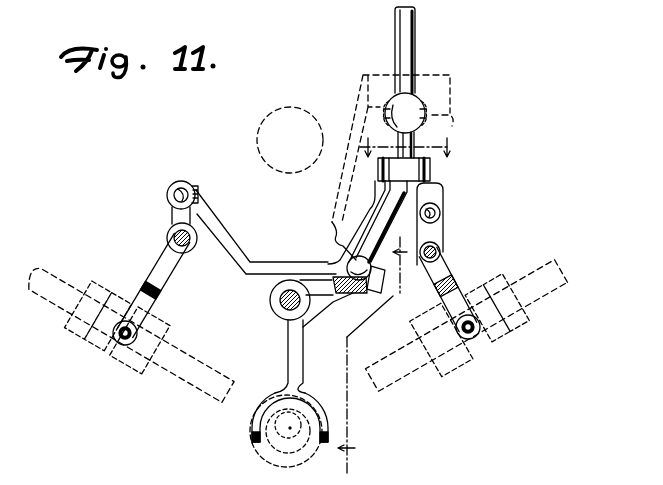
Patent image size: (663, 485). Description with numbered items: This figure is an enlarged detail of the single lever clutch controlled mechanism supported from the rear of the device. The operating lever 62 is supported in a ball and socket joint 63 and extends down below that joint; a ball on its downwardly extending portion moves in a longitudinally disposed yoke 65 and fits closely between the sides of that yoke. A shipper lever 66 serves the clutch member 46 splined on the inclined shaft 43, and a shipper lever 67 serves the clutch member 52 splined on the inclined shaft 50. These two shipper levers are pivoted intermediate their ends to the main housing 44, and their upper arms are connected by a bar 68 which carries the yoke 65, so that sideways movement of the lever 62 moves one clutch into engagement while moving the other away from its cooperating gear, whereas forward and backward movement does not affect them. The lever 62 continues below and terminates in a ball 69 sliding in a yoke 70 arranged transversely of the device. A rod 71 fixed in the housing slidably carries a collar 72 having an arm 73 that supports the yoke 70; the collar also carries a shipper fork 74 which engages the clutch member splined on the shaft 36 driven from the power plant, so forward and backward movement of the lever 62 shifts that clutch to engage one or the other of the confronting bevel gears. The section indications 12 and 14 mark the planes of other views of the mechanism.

The operating lever 62 is at (405, 53).
The ball and socket joint 63 is at (418, 116).
The section line 14- 14 is at (402, 147).
The yoke 65 is at (433, 168).
The main housing 44 is at (430, 187).
The bar 68 is at (267, 270).
The shipper lever 67 is at (160, 270).
The clutch member 52 is at (133, 368).
The inclined shaft 50 is at (202, 383).
The rod 71 is at (278, 293).
The collar 72 is at (272, 306).
The arm 73 is at (325, 303).
The ball 69 is at (371, 298).
The shipper lever 66 is at (381, 291).
The yoke 70 is at (448, 273).
The section line 12- 12 is at (379, 355).
The inclined shaft 43 is at (540, 286).
The clutch member 46 is at (460, 368).
The shipper fork 74 is at (252, 420).
The shaft 36 is at (290, 433).